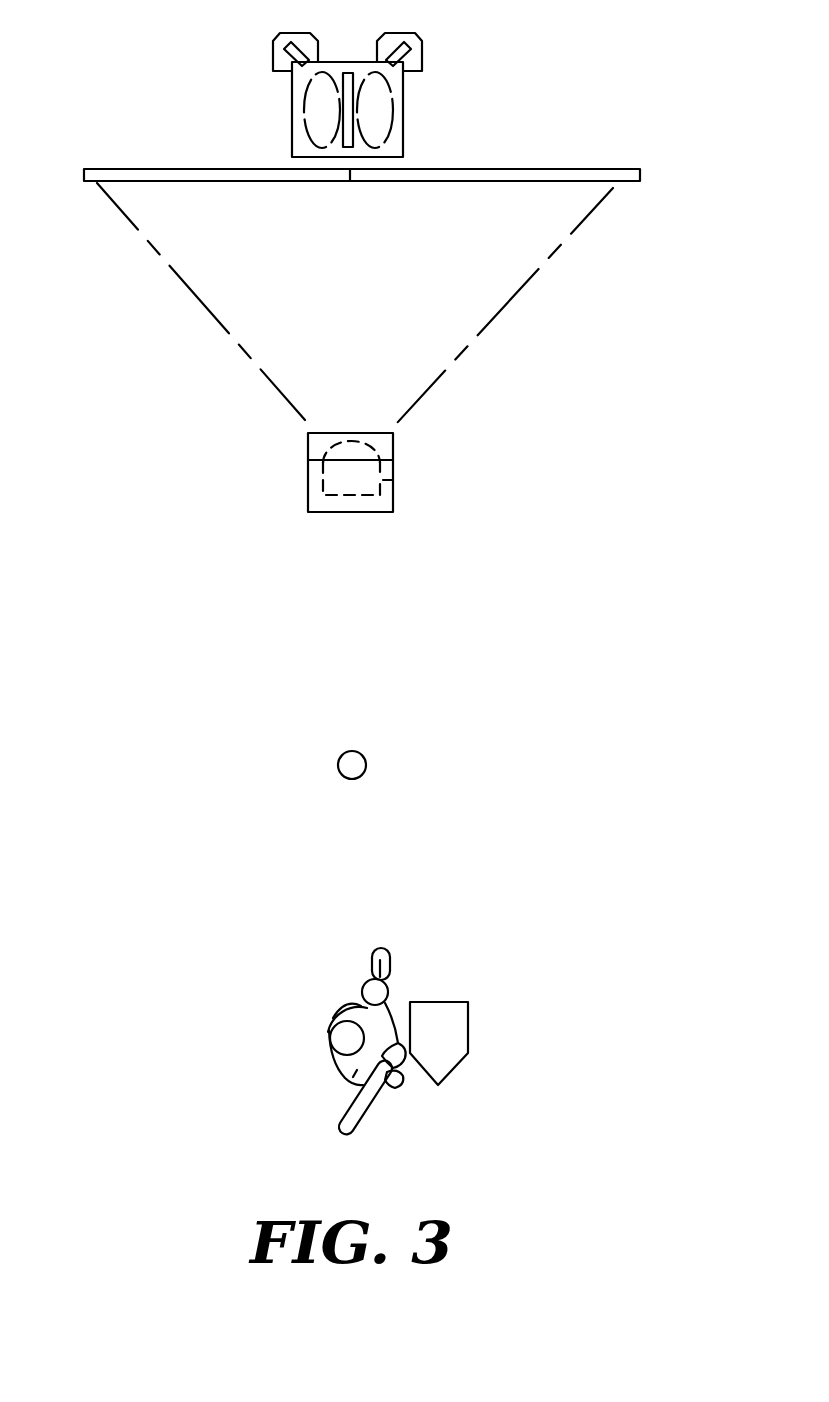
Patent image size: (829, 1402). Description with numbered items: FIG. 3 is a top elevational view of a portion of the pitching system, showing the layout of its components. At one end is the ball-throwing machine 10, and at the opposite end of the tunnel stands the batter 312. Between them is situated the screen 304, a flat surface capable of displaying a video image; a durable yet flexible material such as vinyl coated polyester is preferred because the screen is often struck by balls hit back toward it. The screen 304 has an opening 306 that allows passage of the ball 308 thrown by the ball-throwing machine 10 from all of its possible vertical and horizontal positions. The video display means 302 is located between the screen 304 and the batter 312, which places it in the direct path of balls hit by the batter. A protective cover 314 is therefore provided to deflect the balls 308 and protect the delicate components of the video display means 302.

The ball-throwing machine 10 is at (305, 112).
The video display means 302 is at (395, 480).
The screen 304 is at (541, 169).
The opening 306 is at (350, 181).
The ball 308 is at (366, 766).
The batter 312 is at (330, 1063).
The protective cover 314 is at (308, 490).